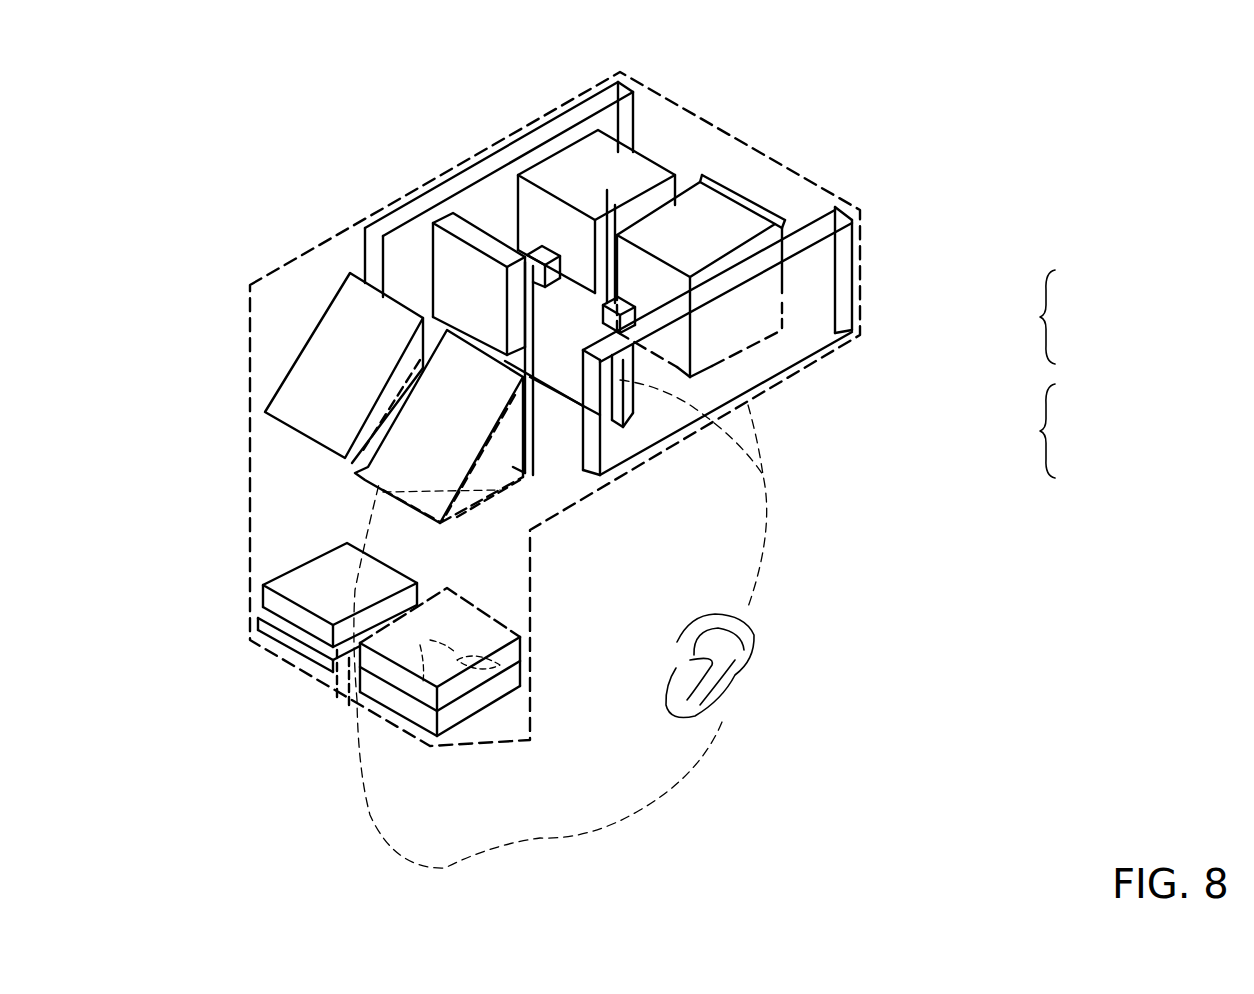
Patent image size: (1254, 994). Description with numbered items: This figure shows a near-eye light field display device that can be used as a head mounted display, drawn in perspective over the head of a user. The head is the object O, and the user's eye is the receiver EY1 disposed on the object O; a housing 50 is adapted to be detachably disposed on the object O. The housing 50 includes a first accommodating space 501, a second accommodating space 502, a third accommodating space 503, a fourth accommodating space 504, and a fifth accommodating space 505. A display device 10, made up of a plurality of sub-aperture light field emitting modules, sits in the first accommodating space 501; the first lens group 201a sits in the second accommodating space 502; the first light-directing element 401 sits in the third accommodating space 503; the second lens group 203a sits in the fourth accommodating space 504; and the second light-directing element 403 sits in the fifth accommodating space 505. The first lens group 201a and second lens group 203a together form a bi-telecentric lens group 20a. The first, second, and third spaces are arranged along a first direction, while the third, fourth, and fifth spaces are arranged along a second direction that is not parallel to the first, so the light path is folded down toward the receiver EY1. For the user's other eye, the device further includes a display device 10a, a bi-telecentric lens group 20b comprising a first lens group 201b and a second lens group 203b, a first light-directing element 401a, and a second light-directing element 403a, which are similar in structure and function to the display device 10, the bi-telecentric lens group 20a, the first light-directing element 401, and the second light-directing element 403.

The display device 10 is at (713, 222).
The display device 10a is at (582, 172).
The housing 50 is at (683, 97).
The first accommodating space 501 is at (713, 183).
The second accommodating space 502 is at (773, 477).
The third accommodating space 503 is at (360, 503).
The fourth accommodating space 504 is at (333, 678).
The fifth accommodating space 505 is at (333, 700).
The first lens group 201a is at (562, 327).
The first lens group 201b is at (457, 283).
The second lens group 203a is at (473, 637).
The second lens group 203b is at (320, 582).
The first light-directing element 401a is at (340, 376).
The first light-directing element 401 is at (400, 452).
The second light-directing element 403a is at (300, 640).
The second light-directing element 403 is at (492, 720).
The bi-telecentric lens group 20a is at (1057, 317).
The bi-telecentric lens group 20b is at (1057, 431).
The receiver EY1 is at (507, 677).
The object O is at (705, 550).